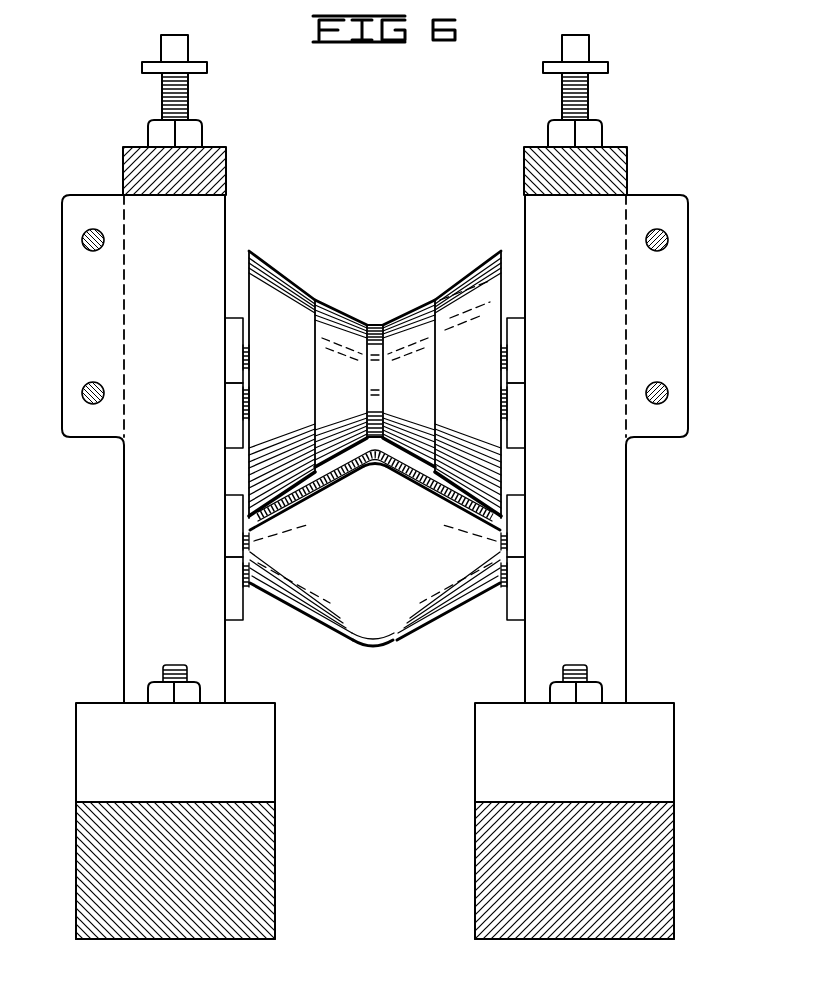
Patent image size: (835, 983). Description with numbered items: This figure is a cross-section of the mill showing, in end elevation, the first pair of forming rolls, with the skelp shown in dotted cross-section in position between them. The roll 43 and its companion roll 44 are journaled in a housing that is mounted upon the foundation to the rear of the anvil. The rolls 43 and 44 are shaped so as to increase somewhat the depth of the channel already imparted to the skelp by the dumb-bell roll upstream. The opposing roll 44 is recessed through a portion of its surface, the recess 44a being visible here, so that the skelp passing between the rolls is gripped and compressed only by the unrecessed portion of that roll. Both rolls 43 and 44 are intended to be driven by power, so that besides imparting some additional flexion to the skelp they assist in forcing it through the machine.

The companion roll 44 is at (285, 288).
The recess 44a is at (423, 313).
The roll 43 is at (363, 632).